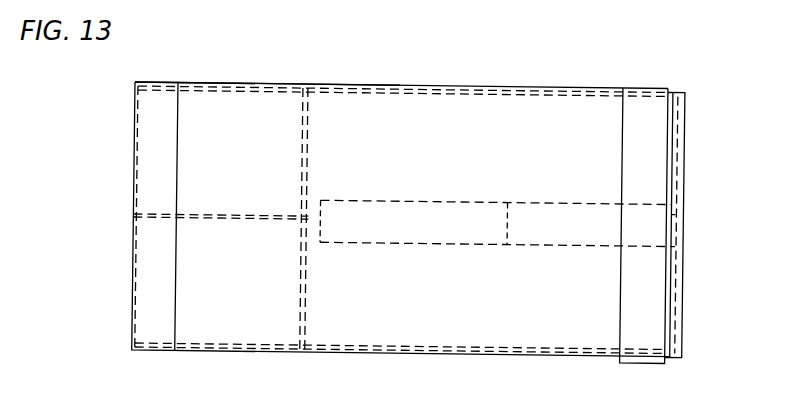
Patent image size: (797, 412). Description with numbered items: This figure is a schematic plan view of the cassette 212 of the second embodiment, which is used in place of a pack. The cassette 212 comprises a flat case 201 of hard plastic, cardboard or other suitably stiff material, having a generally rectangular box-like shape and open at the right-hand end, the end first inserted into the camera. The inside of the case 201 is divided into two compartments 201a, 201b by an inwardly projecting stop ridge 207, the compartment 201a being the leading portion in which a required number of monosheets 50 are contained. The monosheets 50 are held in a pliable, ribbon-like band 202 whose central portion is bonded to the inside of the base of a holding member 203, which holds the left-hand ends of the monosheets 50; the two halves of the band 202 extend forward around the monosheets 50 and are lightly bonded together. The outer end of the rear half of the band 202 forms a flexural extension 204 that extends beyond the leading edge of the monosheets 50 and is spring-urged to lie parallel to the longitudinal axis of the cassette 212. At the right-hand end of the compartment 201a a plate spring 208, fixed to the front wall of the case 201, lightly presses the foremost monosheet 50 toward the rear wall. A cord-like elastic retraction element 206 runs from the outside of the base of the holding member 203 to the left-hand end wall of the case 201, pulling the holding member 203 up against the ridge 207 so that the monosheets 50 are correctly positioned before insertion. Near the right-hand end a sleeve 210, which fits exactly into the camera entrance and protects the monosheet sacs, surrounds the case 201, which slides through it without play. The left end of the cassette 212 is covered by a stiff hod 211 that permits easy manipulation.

The monosheet 50 is at (522, 93).
The flat case 201 is at (224, 330).
The leading compartment 201a is at (427, 125).
The rear compartment 201b is at (272, 325).
The ribbon-like band 202 is at (445, 237).
The holding member 203 is at (312, 232).
The flexural extension 204 is at (681, 222).
The elastic retraction element 206 is at (153, 221).
The stop ridge 207 is at (304, 147).
The plate spring 208 is at (571, 240).
The sleeve 210 is at (646, 88).
The hod 211 is at (152, 133).
The cassette 212 is at (345, 79).